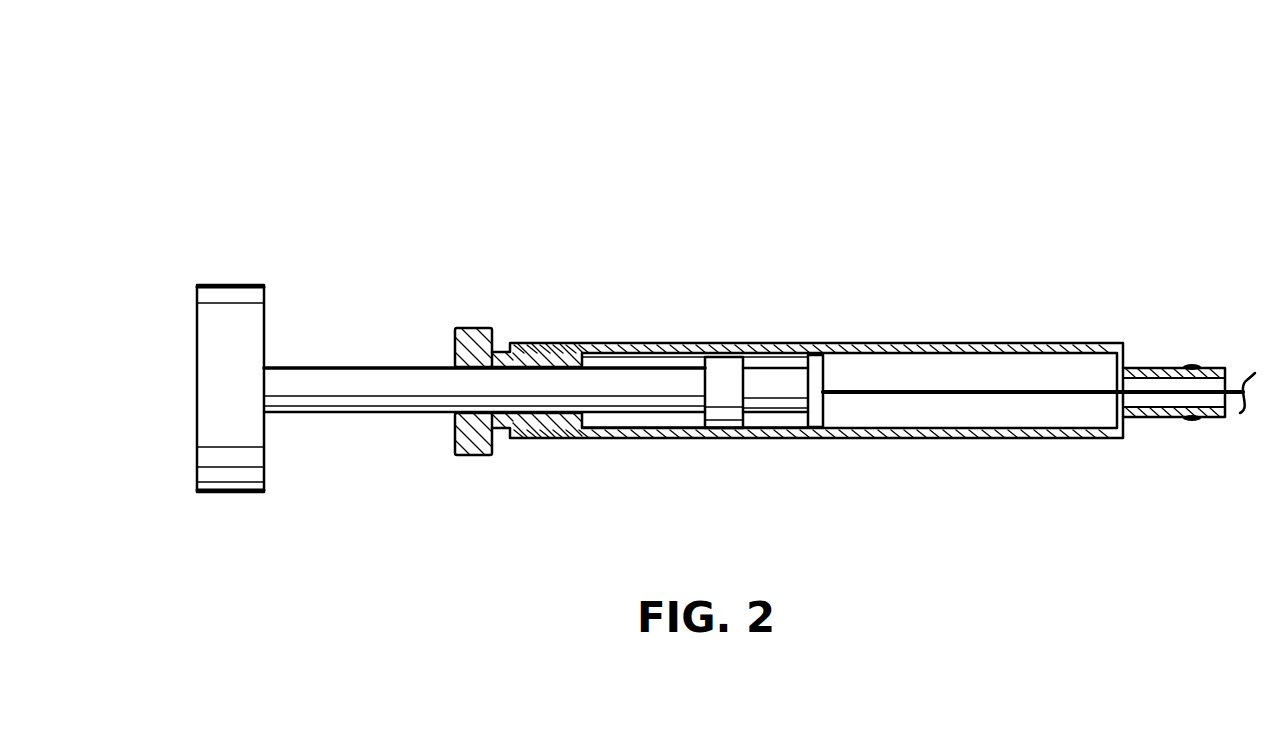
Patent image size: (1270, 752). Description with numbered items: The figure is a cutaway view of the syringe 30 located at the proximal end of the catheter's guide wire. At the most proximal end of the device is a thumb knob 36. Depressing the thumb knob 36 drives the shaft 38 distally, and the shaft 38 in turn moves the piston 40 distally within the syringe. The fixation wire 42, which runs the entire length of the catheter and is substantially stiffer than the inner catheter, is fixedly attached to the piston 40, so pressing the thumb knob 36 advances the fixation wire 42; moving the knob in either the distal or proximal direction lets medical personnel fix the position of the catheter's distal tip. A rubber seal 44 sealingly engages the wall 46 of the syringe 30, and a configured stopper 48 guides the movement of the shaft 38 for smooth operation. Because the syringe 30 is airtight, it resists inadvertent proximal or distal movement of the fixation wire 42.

The syringe 30 is at (968, 128).
The thumb knob 36 is at (197, 362).
The shaft 38 is at (327, 412).
The piston 40 is at (812, 412).
The fixation wire 42 is at (887, 390).
The rubber seal 44 is at (722, 417).
The wall 46 is at (610, 432).
The configured stopper 48 is at (473, 328).